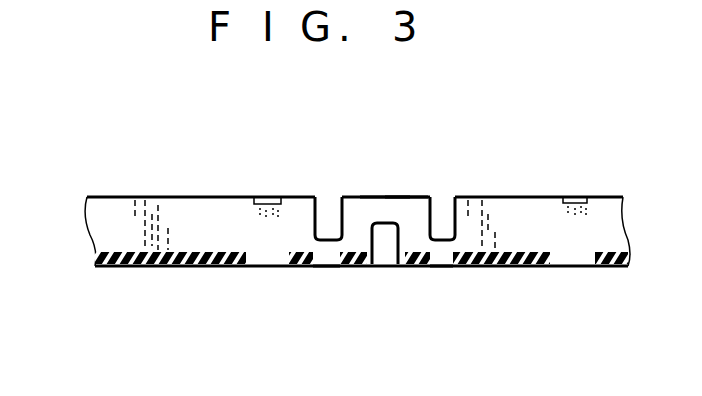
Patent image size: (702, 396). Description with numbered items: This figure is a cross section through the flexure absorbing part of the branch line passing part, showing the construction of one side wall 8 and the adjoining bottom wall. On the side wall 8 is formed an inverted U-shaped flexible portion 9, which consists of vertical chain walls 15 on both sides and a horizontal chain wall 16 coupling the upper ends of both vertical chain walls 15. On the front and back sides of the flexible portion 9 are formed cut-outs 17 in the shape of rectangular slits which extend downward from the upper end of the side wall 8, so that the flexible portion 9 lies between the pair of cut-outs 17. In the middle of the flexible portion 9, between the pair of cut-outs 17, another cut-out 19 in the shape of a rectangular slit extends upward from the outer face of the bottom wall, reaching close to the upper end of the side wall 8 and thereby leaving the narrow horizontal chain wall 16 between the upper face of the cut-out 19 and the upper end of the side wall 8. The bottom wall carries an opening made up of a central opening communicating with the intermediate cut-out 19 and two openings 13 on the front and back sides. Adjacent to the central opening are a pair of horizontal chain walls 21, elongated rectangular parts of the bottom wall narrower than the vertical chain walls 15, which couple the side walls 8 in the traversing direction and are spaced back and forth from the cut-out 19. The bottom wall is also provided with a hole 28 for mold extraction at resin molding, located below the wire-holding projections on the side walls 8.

The side wall 8 is at (527, 210).
The flexible portion 9 is at (395, 196).
The opening 13 is at (324, 258).
The vertical chain wall 15 is at (412, 228).
The horizontal chain wall 16 is at (382, 210).
The cut-out 17 is at (327, 213).
The cut-out 19 is at (382, 247).
The horizontal chain wall 21 is at (354, 262).
The hole 28 is at (262, 258).